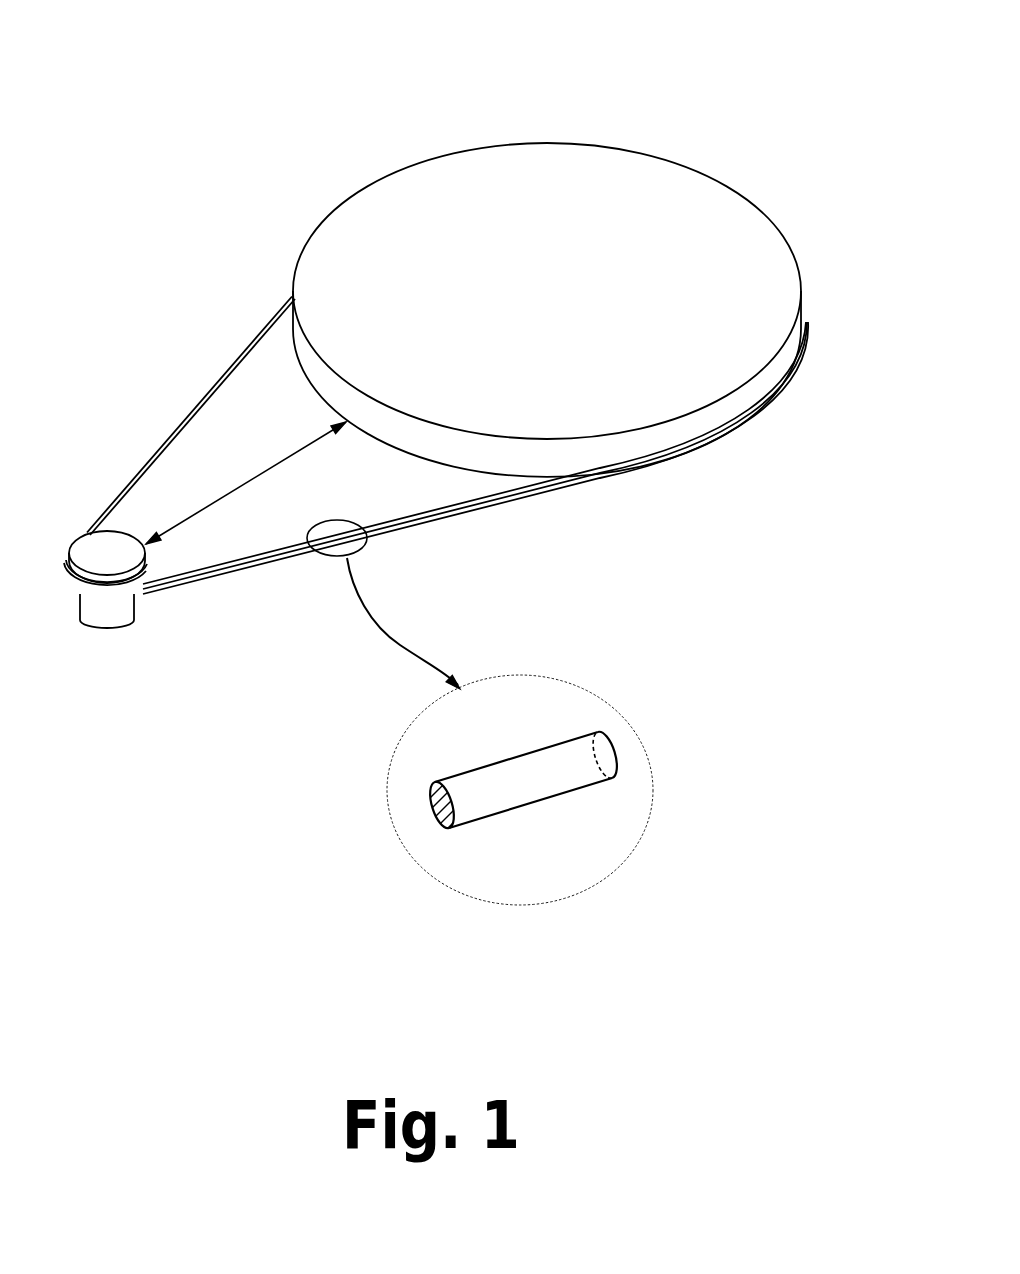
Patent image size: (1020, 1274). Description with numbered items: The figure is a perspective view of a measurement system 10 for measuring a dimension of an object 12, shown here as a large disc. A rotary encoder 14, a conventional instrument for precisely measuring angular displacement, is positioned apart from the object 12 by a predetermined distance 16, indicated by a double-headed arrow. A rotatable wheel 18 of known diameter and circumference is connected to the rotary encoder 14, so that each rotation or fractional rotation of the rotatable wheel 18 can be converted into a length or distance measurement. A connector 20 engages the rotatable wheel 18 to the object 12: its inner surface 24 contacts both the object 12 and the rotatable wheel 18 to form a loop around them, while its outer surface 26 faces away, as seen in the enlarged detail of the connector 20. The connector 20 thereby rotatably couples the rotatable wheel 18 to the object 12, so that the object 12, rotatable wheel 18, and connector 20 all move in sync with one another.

The measurement system 10 is at (283, 201).
The object 12 is at (527, 309).
The rotary encoder 14 is at (117, 608).
The predetermined distance 16 is at (263, 470).
The rotatable wheel 18 is at (94, 568).
The connector 20 is at (447, 598).
The inner surface 24 is at (164, 451).
The outer surface 26 is at (225, 570).